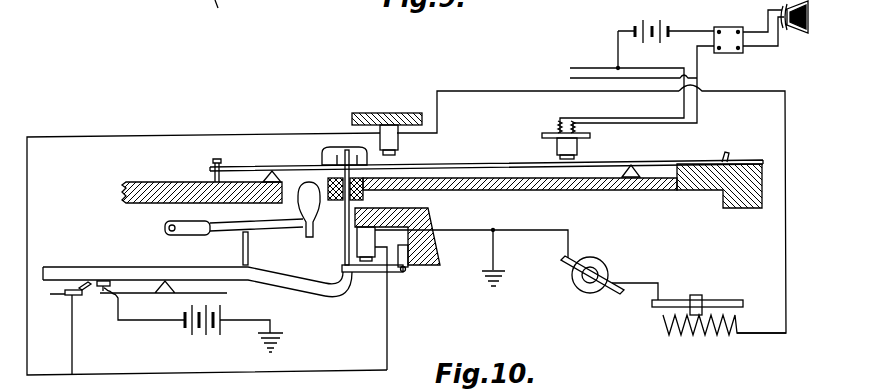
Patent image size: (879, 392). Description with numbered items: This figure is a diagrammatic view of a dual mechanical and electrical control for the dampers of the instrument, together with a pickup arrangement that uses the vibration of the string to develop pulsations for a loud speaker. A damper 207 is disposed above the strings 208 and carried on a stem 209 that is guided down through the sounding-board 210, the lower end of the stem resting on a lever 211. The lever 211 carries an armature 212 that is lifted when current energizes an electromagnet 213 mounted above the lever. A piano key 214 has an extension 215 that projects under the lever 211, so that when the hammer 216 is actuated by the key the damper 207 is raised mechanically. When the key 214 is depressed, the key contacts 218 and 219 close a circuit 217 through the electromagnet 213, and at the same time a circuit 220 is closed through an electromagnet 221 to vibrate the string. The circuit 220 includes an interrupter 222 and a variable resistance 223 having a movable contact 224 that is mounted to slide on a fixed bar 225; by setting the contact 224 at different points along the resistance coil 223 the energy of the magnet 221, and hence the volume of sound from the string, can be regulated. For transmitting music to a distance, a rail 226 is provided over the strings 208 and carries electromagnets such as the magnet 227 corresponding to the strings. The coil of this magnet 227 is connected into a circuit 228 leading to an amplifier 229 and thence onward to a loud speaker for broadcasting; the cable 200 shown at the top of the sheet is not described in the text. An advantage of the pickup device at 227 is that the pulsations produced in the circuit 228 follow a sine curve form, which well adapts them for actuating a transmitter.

The cable 200 is at (230, 7).
The damper 207 is at (326, 152).
The strings 208 is at (496, 148).
The stem 209 is at (346, 224).
The sounding-board 210 is at (558, 189).
The lever 211 is at (372, 275).
The armature 212 is at (386, 270).
The electromagnet 213 is at (358, 246).
The key 214 is at (135, 249).
The extension 215 is at (334, 292).
The hammer 216 is at (292, 231).
The circuit 217 is at (388, 335).
The key contact 218 is at (98, 296).
The key contact 219 is at (72, 298).
The circuit 220 is at (236, 116).
The electromagnet 221 is at (398, 144).
The interrupter 222 is at (598, 258).
The variable resistance 223 is at (683, 332).
The movable contact 224 is at (696, 295).
The fixed bar 225 is at (727, 300).
The rail 226 is at (554, 131).
The magnet 227 is at (580, 147).
The circuit 228 is at (678, 52).
The amplifier 229 is at (742, 10).